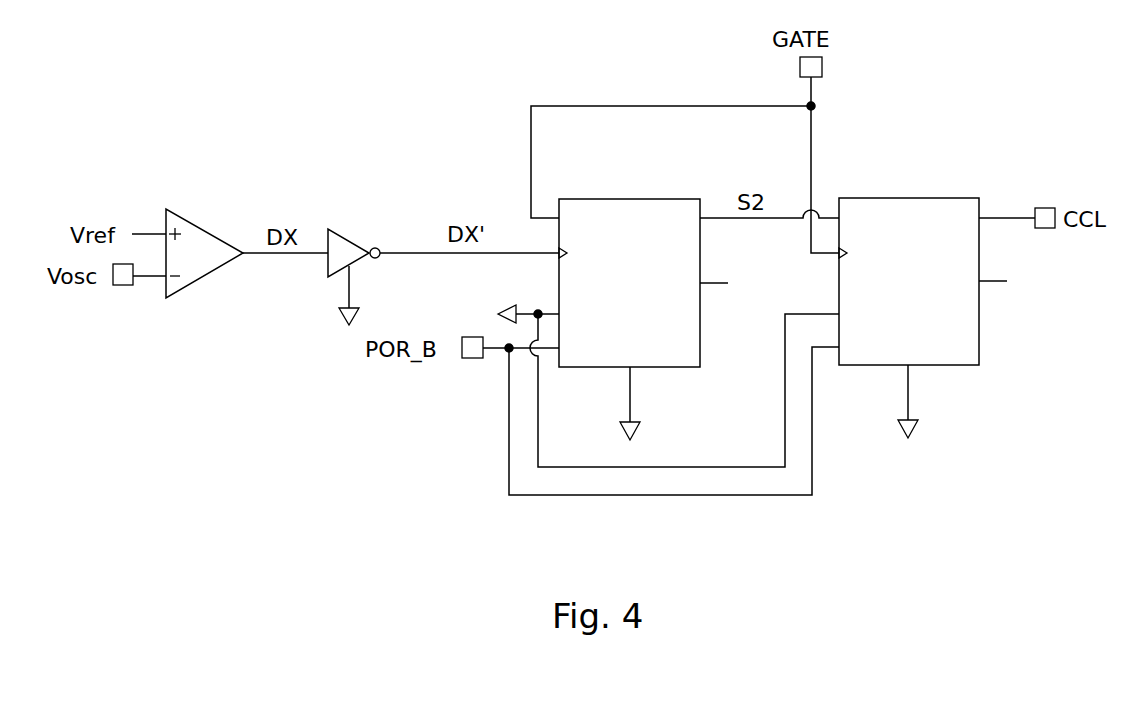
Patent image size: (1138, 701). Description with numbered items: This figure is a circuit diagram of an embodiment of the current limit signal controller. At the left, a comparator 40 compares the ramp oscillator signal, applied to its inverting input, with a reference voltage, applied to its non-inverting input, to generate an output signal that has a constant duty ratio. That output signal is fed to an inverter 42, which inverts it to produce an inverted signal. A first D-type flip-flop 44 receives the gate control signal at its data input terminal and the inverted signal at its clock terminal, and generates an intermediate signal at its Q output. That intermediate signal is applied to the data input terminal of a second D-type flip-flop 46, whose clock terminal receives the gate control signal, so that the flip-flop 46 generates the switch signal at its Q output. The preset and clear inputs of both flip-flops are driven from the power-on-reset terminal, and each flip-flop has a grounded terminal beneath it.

The comparator 40 is at (202, 228).
The inverter 42 is at (345, 238).
The D-type flip-flop 44 is at (627, 199).
The D-type flip-flop 46 is at (906, 198).